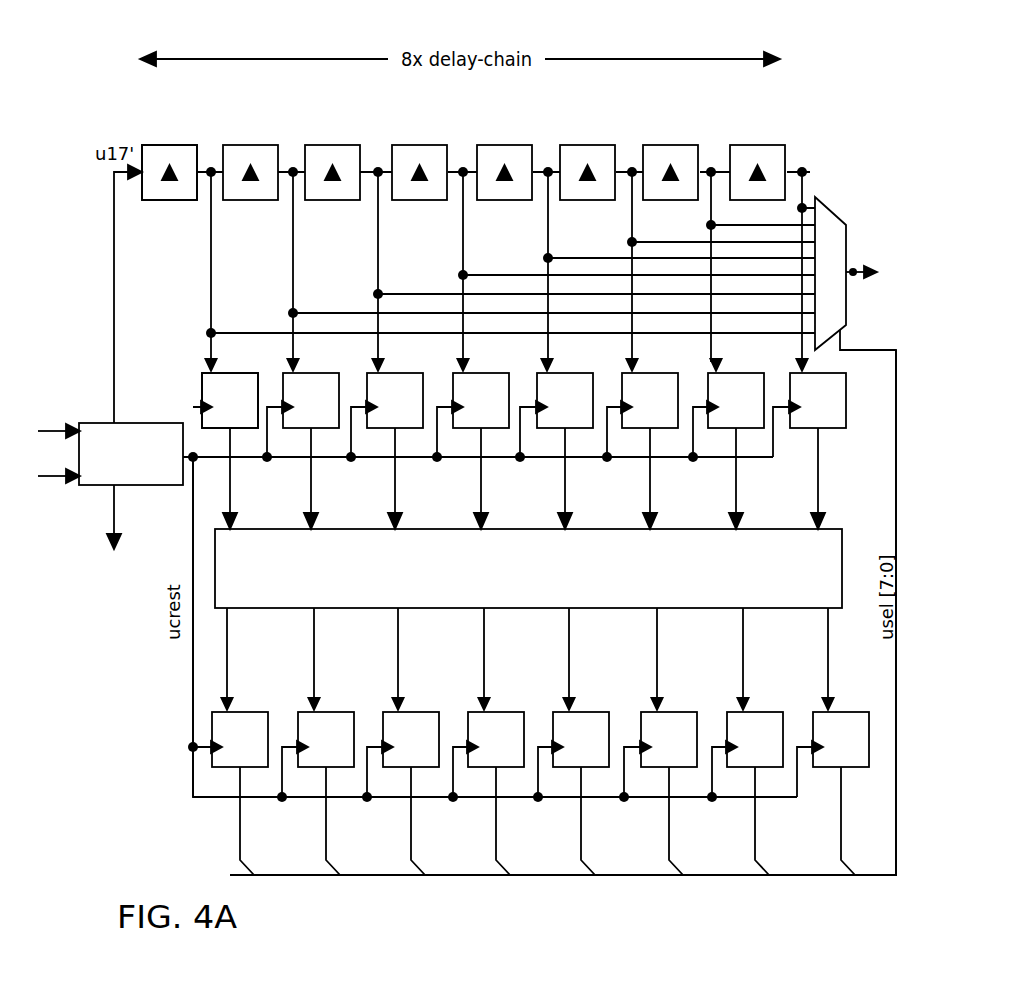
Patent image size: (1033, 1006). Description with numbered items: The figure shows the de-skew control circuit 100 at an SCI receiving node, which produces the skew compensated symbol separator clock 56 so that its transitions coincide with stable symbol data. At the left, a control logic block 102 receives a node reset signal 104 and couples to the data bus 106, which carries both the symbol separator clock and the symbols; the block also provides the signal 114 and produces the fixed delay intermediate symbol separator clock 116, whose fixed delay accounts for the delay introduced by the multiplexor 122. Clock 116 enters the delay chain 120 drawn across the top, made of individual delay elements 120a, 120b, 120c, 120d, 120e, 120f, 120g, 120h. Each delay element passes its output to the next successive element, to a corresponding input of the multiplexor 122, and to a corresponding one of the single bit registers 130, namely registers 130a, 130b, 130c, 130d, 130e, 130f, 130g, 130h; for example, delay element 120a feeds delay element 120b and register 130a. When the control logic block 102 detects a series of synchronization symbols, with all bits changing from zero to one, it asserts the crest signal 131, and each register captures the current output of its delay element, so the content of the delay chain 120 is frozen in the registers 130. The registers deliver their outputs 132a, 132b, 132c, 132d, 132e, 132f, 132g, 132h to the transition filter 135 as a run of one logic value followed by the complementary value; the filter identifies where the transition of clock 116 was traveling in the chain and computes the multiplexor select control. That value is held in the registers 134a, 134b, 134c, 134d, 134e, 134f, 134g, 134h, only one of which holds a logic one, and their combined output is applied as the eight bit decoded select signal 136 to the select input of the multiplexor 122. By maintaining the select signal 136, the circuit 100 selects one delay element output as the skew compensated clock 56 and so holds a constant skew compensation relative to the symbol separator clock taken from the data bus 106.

The de-skew control circuit 100 is at (802, 146).
The control logic block 102 is at (125, 423).
The node reset signal 104 is at (58, 420).
The data bus 106 is at (66, 476).
The signal 114 is at (117, 497).
The intermediate symbol separator clock 116 is at (114, 283).
The delay chain 120 is at (143, 140).
The delay element 120a is at (150, 200).
The delay element 120b is at (231, 200).
The delay element 120c is at (313, 200).
The delay element 120d is at (400, 200).
The delay element 120e is at (485, 200).
The delay element 120f is at (568, 200).
The delay element 120g is at (651, 200).
The delay element 120h is at (745, 145).
The multiplexor 122 is at (822, 215).
The skew compensated symbol separator clock 56 is at (862, 268).
The single bit registers 130 is at (190, 372).
The register 130a is at (220, 372).
The register 130b is at (302, 372).
The register 130c is at (386, 372).
The register 130d is at (472, 372).
The register 130e is at (556, 372).
The register 130f is at (641, 372).
The register 130g is at (727, 372).
The register 130h is at (870, 385).
The crest signal 131 is at (193, 712).
The register output 132a is at (233, 505).
The register output 132b is at (314, 505).
The register output 132c is at (398, 505).
The register output 132d is at (484, 505).
The register output 132e is at (568, 505).
The register output 132f is at (653, 505).
The register output 132g is at (739, 505).
The register output 132h is at (821, 505).
The register 134a is at (241, 700).
The register 134b is at (327, 700).
The register 134c is at (412, 700).
The register 134d is at (497, 700).
The register 134e is at (582, 700).
The register 134f is at (670, 700).
The register 134g is at (756, 700).
The register 134h is at (842, 700).
The transition filter 135 is at (528, 568).
The select signal 136 is at (897, 876).